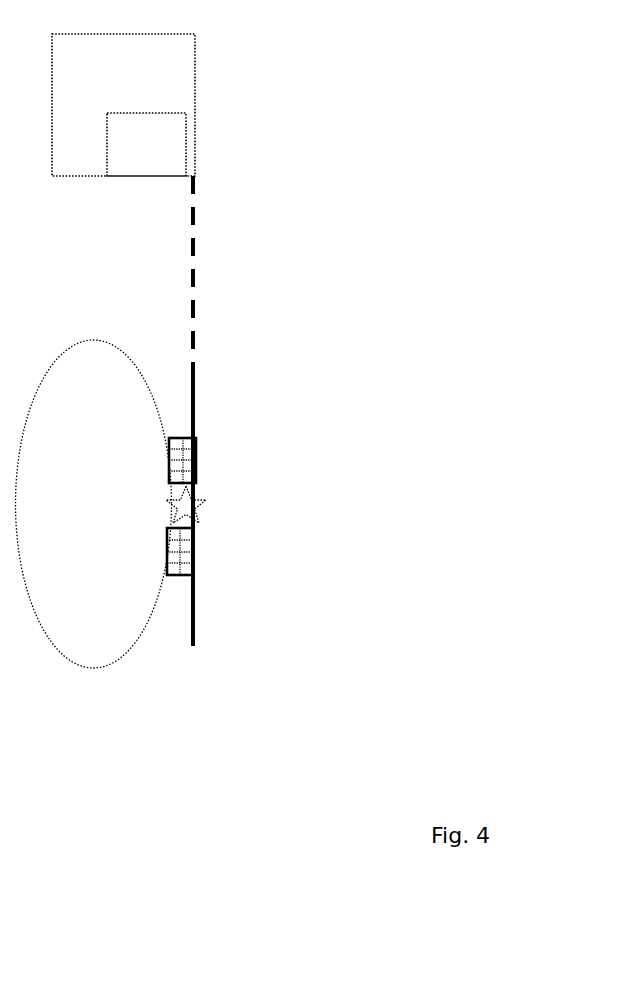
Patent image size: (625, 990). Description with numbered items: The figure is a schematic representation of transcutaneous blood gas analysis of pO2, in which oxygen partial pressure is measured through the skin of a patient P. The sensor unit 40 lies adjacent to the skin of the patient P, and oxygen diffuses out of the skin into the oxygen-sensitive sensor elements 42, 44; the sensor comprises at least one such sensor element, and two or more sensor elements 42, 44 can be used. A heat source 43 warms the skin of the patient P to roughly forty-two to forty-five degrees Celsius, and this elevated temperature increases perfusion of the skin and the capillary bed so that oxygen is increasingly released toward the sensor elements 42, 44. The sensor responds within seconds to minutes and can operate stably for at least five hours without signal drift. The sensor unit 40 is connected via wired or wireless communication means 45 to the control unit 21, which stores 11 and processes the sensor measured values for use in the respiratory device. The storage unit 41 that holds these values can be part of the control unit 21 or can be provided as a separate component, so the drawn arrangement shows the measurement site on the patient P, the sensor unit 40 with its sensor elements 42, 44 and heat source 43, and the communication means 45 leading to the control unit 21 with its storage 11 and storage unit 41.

The control unit 21 is at (168, 89).
The storage function of the control unit 11 is at (167, 138).
The wired or wireless communication means 45 is at (195, 287).
The sensor unit 40 is at (320, 322).
The storage unit 41 is at (195, 424).
The sensor element 42 is at (195, 473).
The heat source 43 is at (195, 507).
The sensor element 44 is at (195, 577).
The patient P is at (92, 620).